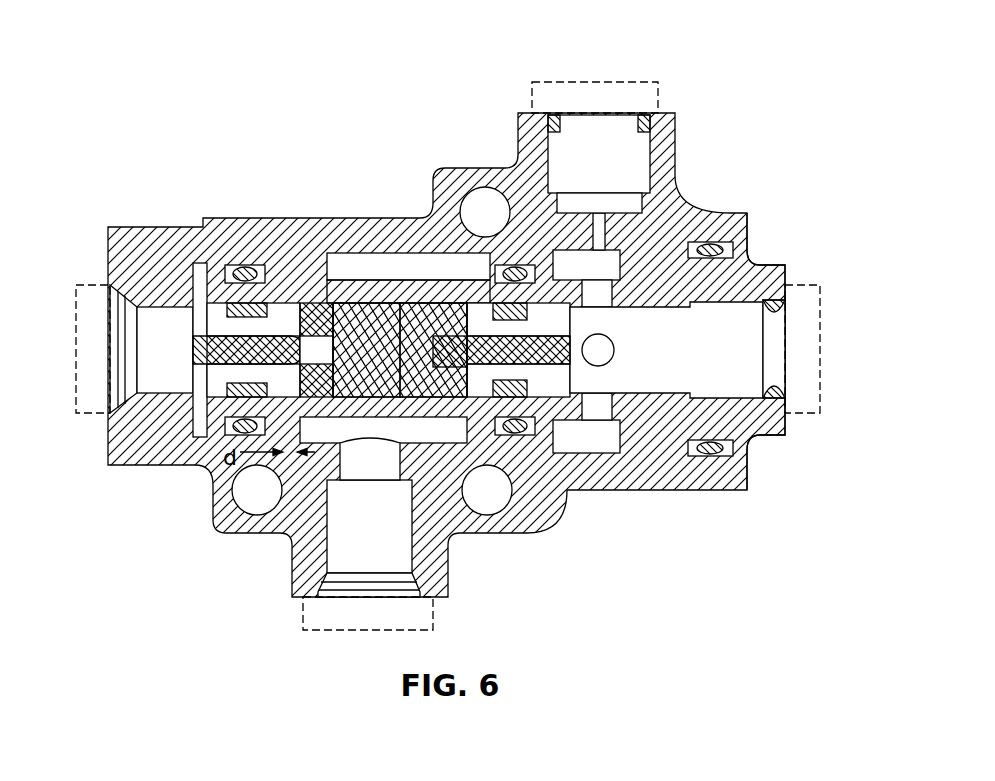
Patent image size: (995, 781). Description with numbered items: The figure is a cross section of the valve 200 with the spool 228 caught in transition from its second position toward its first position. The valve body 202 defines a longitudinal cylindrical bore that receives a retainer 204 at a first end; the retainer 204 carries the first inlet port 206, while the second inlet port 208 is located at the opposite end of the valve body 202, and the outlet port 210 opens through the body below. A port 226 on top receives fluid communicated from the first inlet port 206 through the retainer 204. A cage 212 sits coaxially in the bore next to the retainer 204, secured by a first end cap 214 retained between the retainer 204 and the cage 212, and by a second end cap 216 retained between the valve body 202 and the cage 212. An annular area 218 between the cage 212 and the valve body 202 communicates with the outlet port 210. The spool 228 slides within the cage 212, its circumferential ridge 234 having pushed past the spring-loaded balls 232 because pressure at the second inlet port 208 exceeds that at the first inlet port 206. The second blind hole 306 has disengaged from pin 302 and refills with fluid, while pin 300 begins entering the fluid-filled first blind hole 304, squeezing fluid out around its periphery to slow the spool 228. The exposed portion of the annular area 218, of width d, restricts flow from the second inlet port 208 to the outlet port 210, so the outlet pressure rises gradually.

The valve 200 is at (425, 323).
The valve body 202 is at (232, 227).
The retainer 204 is at (767, 268).
The first inlet port 206 is at (800, 350).
The second inlet port 208 is at (103, 385).
The outlet port 210 is at (360, 587).
The cage 212 is at (337, 287).
The first end cap 214 is at (528, 296).
The second end cap 216 is at (197, 281).
The annular area 218 is at (326, 449).
The port 226 is at (600, 102).
The spool 228 is at (413, 333).
The balls 232 is at (404, 245).
The circumferential ridge 234 is at (385, 317).
The pin 300 is at (550, 355).
The pin 302 is at (217, 350).
The first blind hole 304 is at (455, 341).
The second blind hole 306 is at (307, 326).